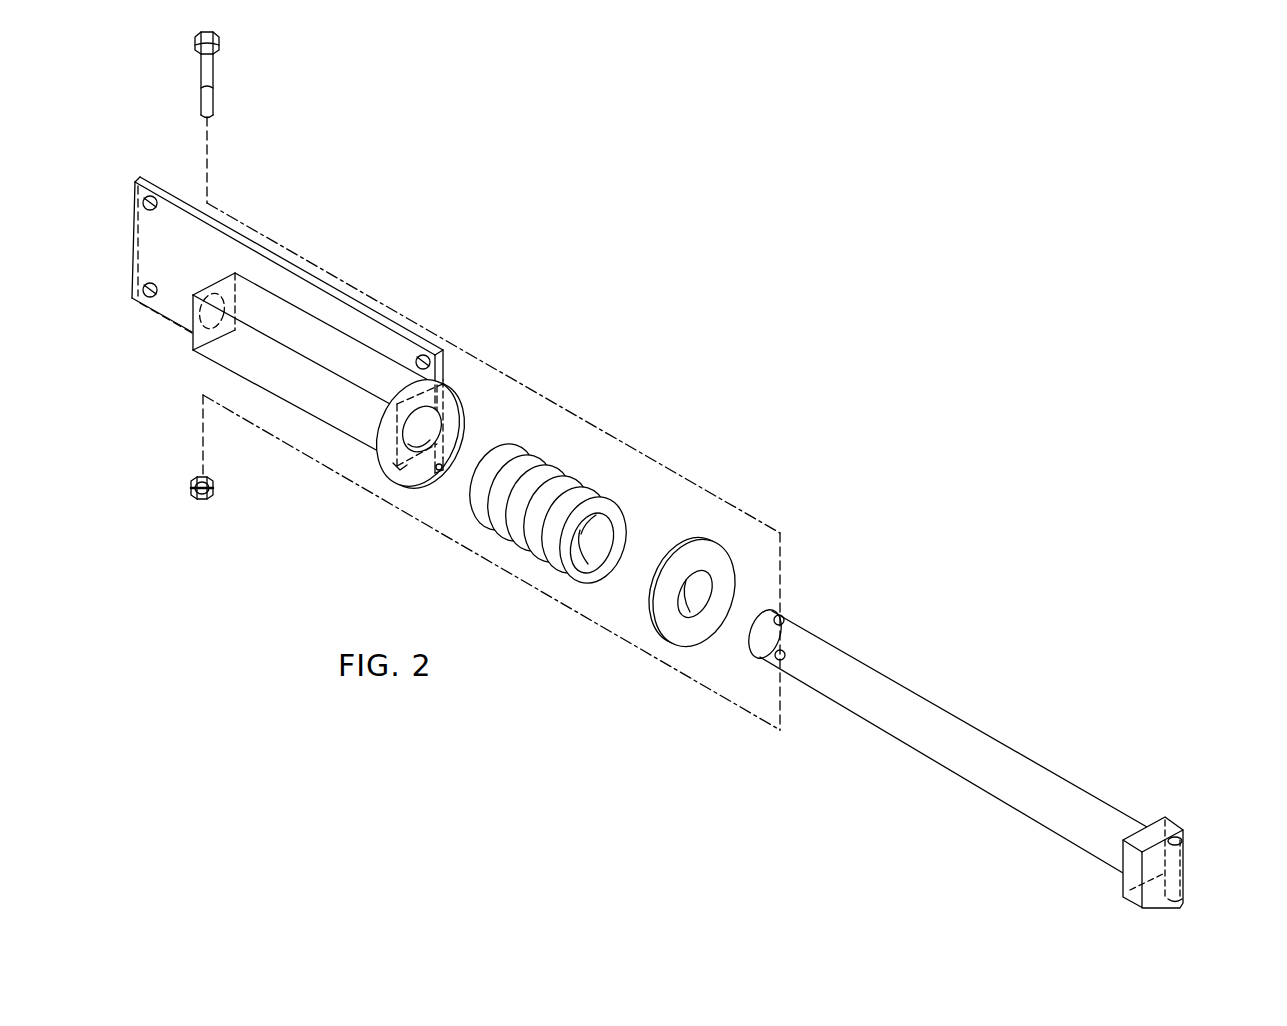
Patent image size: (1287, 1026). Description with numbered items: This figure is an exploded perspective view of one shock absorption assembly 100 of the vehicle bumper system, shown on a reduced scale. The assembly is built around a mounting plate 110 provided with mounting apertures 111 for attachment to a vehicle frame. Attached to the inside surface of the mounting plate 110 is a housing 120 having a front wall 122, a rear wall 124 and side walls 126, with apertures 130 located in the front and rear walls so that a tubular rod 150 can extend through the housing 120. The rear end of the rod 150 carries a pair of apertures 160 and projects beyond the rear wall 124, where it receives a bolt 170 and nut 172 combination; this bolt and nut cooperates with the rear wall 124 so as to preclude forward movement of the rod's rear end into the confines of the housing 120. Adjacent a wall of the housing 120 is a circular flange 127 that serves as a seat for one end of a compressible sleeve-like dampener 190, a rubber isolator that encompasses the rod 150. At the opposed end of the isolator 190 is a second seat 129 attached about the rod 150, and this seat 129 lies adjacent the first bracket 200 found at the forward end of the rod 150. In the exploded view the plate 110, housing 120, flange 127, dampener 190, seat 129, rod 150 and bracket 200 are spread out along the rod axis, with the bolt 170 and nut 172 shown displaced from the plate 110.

The shock absorption assembly 100 is at (680, 378).
The mounting plate 110 is at (140, 178).
The mounting apertures 111 is at (133, 298).
The housing 120 is at (306, 431).
The front wall 122 is at (408, 460).
The rear wall 124 is at (200, 290).
The side wall 126 is at (222, 355).
The circular flange 127 is at (460, 398).
The second seat 129 is at (695, 562).
The apertures 130 is at (222, 303).
The tubular rod 150 is at (880, 713).
The apertures 160 is at (783, 653).
The bolt 170 is at (218, 65).
The nut 172 is at (204, 498).
The compressible sleeve-like dampener 190 is at (550, 470).
The first bracket 200 is at (1197, 808).